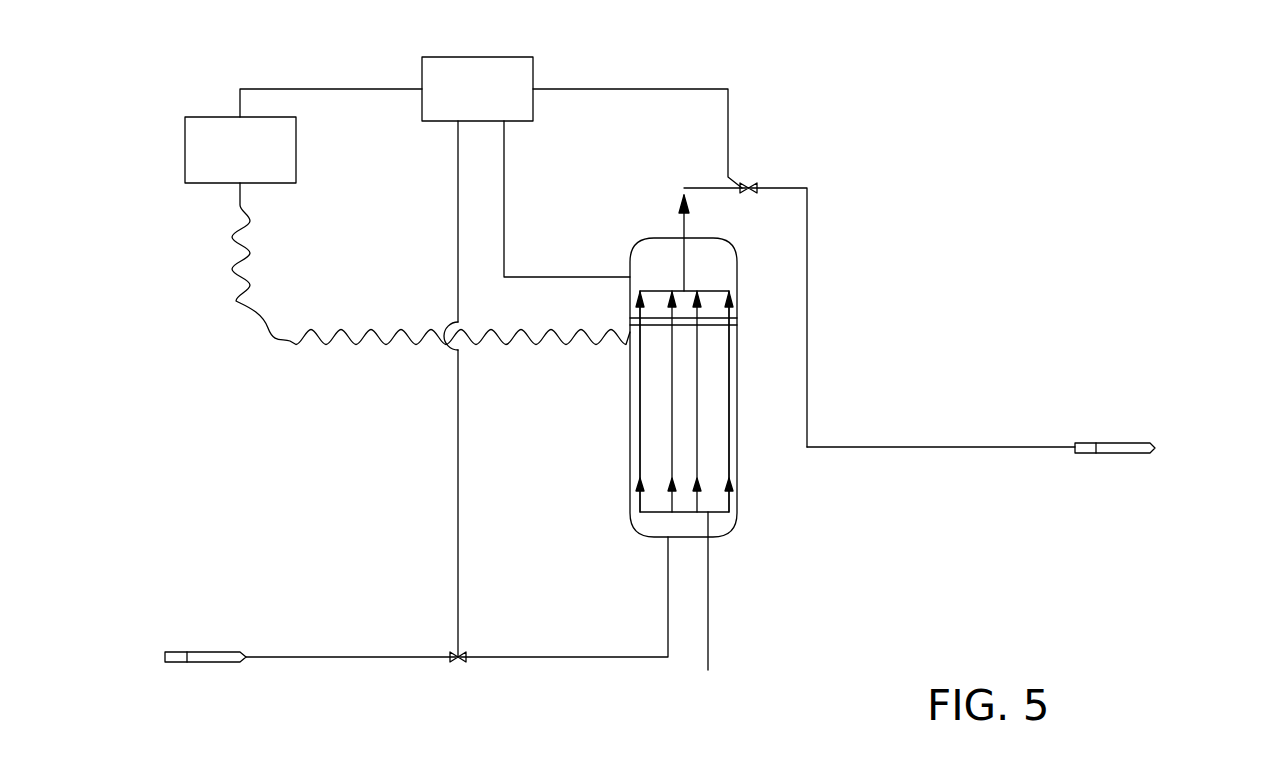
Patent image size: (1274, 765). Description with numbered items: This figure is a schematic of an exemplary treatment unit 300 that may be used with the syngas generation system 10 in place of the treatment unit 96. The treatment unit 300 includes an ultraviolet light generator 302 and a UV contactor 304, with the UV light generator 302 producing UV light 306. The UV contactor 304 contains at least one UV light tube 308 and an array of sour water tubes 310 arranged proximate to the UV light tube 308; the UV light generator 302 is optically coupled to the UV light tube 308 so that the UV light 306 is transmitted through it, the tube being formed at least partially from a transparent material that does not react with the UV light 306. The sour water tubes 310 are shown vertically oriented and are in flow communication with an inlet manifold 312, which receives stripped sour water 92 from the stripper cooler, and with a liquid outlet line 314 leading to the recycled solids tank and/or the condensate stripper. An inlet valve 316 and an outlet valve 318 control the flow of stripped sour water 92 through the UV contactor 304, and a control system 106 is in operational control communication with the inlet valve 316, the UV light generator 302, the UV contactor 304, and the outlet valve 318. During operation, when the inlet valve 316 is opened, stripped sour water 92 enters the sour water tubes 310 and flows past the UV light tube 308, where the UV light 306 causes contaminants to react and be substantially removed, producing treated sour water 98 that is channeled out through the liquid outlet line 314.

The syngas generation system 10 is at (1082, 62).
The treatment unit 96 is at (1090, 90).
The treatment unit 300 is at (962, 73).
The control system 106 is at (501, 102).
The ultraviolet (UV) light generator 302 is at (263, 164).
The UV contactor 304 is at (737, 512).
The UV light 306 is at (238, 272).
The UV light tube 308 is at (737, 325).
The sour water tube 310 is at (673, 435).
The inlet manifold 312 is at (709, 605).
The liquid outlet line 314 is at (875, 447).
The inlet valve 316 is at (458, 660).
The outlet valve 318 is at (752, 183).
The stripped sour water 92 is at (284, 657).
The treated sour water 98 is at (1040, 448).